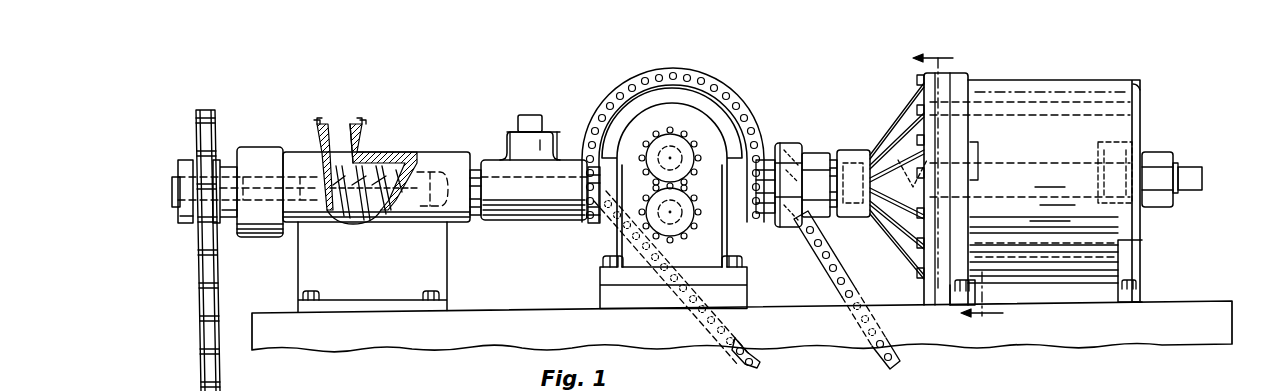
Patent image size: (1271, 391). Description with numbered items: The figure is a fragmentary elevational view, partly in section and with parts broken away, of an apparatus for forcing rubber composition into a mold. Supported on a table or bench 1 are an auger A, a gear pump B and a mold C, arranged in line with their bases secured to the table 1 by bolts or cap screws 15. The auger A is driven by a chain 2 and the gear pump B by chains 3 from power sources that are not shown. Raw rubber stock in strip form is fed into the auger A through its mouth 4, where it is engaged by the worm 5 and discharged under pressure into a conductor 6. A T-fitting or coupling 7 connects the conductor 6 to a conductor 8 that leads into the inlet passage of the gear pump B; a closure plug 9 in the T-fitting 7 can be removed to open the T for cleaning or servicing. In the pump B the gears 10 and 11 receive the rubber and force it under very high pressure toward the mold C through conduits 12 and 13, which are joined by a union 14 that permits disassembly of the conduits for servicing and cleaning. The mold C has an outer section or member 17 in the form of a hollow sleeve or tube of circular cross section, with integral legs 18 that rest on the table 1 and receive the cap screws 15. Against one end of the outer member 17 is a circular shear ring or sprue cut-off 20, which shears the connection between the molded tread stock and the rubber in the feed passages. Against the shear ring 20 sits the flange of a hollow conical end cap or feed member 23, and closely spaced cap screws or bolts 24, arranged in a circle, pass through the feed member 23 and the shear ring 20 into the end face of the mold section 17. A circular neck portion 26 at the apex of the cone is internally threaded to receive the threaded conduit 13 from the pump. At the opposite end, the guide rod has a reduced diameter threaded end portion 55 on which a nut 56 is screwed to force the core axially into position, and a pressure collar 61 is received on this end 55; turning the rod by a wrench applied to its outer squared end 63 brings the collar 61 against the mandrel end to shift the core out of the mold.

The table or bench 1 is at (493, 311).
The chain 2 is at (197, 357).
The chain 3 is at (737, 355).
The mouth 4 is at (335, 125).
The worm 5 is at (350, 215).
The conductor 6 is at (472, 167).
The T-fitting or coupling 7 is at (557, 160).
The conductor 8 is at (590, 219).
The closure plug 9 is at (520, 116).
The gear 10 is at (648, 138).
The gear 11 is at (690, 236).
The conduit 12 is at (757, 213).
The conduit 13 is at (818, 157).
The union 14 is at (790, 143).
The bolts or cap screws 15 is at (313, 292).
The outer section or member 17 is at (1057, 80).
The legs 18 is at (955, 299).
The shear ring or sprue cut-off 20 is at (928, 76).
The hollow conical end cap or feed member 23 is at (907, 232).
The cap screws or bolts 24 is at (916, 276).
The circular neck portion 26 is at (850, 150).
The reduced diameter threaded end portion 55 is at (1177, 197).
The nut 56 is at (1176, 203).
The pressure collar 61 is at (1132, 146).
The outer squared end 63 is at (1202, 178).
The auger A is at (395, 150).
The gear pump B is at (683, 108).
The mold C is at (1128, 80).